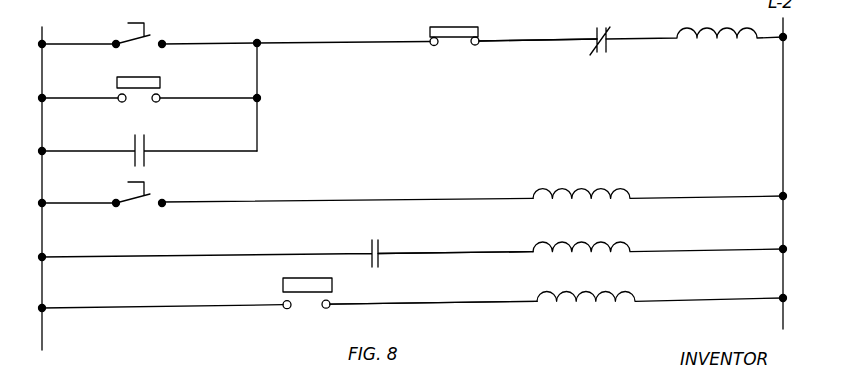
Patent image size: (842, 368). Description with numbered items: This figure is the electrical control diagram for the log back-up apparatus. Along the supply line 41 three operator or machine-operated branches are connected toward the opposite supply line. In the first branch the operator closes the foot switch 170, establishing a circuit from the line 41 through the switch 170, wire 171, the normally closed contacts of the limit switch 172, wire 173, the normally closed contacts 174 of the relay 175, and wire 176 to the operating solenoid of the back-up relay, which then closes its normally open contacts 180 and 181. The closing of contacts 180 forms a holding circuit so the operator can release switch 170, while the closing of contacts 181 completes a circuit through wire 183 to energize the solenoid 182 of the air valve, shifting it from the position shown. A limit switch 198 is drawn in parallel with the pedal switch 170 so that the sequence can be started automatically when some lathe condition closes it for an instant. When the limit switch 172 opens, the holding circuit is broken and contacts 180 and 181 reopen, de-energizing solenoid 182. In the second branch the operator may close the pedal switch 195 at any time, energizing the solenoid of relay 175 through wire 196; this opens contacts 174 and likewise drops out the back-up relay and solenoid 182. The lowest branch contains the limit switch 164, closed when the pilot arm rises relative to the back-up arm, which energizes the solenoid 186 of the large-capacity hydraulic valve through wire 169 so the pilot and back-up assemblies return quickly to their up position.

The line 41 is at (39, 178).
The foot switch 170 is at (150, 35).
The wire 171 is at (262, 43).
The limit switch 172 is at (476, 27).
The wire 173 is at (554, 39).
The normally closed contacts 174 is at (596, 50).
The wire 176 is at (677, 37).
The limit switch 198 is at (140, 77).
The normally open contacts 180 is at (144, 141).
The pedal switch 195 is at (150, 194).
The wire 196 is at (346, 199).
The relay 175 is at (594, 188).
The normally open contacts 181 is at (380, 248).
The wire 183 is at (490, 252).
The solenoid 182 is at (594, 242).
The limit switch 164 is at (305, 278).
The conductor 169 is at (451, 303).
The solenoid 186 is at (595, 292).